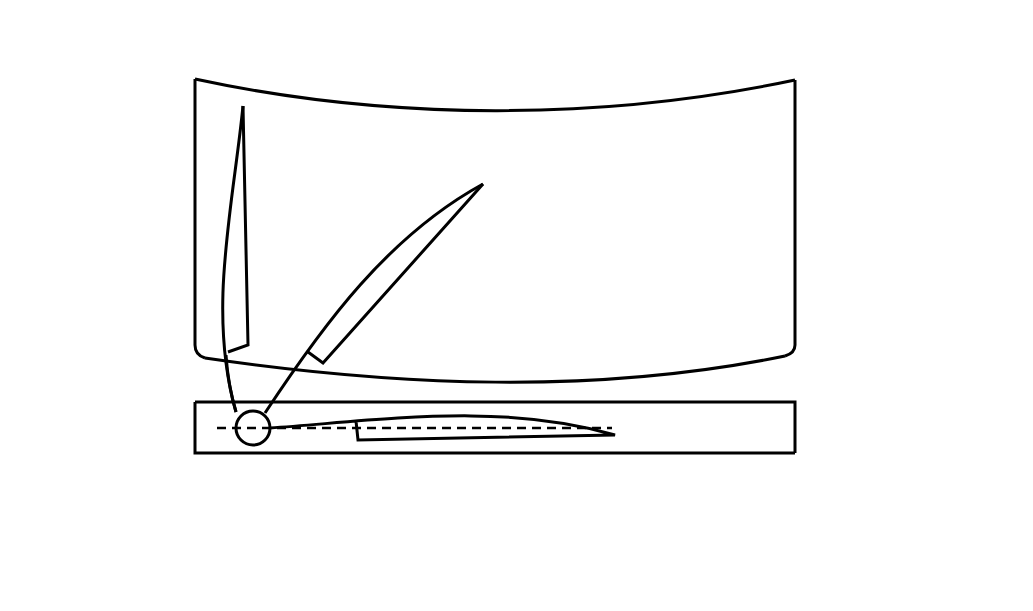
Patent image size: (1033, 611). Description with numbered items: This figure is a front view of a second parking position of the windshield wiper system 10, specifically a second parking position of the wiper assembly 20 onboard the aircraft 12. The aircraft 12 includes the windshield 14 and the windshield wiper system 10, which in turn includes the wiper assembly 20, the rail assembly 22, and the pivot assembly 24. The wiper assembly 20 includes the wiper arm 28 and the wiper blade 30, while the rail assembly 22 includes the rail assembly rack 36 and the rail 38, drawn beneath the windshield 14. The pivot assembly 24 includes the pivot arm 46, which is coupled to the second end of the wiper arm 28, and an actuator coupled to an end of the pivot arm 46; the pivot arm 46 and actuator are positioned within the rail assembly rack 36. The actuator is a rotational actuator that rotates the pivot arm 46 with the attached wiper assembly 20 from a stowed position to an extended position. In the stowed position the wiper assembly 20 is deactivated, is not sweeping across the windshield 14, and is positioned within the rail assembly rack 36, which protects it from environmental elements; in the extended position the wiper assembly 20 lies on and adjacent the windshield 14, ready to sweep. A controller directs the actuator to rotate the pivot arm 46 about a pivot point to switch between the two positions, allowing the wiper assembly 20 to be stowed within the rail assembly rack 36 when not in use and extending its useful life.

The aircraft 12 is at (142, 86).
The windshield wiper system 10 is at (405, 128).
The windshield 14 is at (753, 92).
The wiper assembly 20 is at (169, 248).
The wiper blade 30 is at (252, 146).
The wiper arm 28 is at (213, 381).
The rail assembly rack 36 is at (766, 467).
The rail assembly 22 is at (183, 475).
The pivot assembly 24 is at (258, 492).
The pivot arm 46 is at (278, 455).
The rail 38 is at (626, 421).